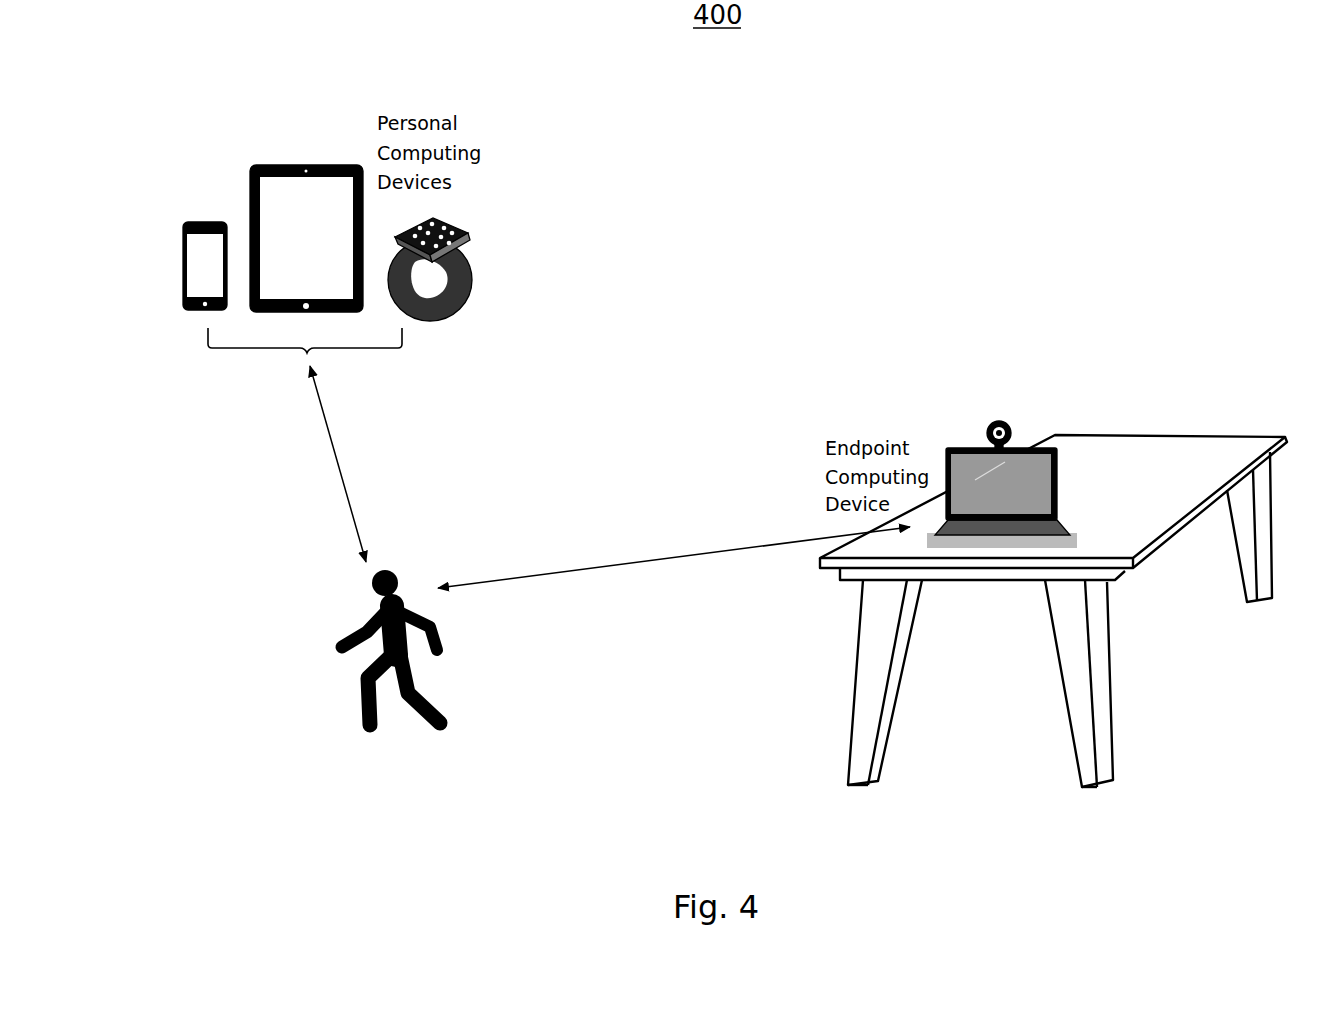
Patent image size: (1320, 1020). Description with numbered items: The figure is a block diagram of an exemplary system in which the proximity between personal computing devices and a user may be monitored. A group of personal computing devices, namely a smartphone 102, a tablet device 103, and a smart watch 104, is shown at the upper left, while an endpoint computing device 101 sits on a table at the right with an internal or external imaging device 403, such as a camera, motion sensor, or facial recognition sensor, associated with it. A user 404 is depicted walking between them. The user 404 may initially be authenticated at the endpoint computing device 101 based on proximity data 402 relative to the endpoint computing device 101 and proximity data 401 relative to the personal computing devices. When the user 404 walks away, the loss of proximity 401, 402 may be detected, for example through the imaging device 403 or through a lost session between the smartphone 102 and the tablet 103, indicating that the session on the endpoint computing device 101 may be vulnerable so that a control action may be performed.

The endpoint computing device 101 is at (1062, 497).
The smartphone 102 is at (170, 248).
The tablet device 103 is at (236, 199).
The smart watch 104 is at (478, 248).
The proximity to personal computing devices 401 is at (208, 460).
The proximity to endpoint computing device 402 is at (622, 657).
The imaging device 403 is at (1000, 405).
The user 404 is at (346, 625).